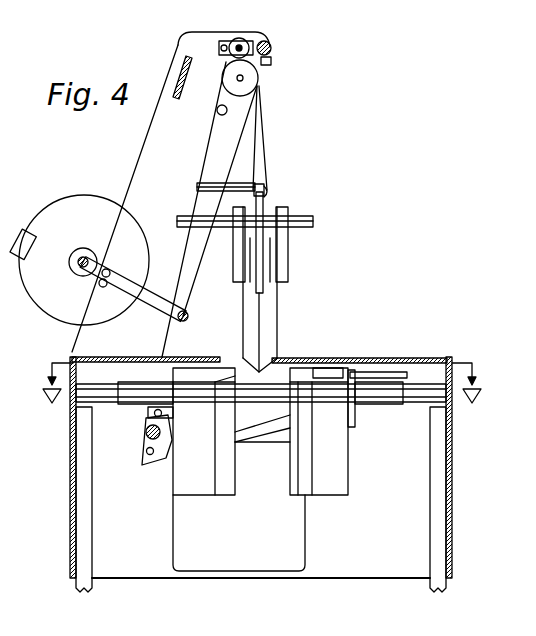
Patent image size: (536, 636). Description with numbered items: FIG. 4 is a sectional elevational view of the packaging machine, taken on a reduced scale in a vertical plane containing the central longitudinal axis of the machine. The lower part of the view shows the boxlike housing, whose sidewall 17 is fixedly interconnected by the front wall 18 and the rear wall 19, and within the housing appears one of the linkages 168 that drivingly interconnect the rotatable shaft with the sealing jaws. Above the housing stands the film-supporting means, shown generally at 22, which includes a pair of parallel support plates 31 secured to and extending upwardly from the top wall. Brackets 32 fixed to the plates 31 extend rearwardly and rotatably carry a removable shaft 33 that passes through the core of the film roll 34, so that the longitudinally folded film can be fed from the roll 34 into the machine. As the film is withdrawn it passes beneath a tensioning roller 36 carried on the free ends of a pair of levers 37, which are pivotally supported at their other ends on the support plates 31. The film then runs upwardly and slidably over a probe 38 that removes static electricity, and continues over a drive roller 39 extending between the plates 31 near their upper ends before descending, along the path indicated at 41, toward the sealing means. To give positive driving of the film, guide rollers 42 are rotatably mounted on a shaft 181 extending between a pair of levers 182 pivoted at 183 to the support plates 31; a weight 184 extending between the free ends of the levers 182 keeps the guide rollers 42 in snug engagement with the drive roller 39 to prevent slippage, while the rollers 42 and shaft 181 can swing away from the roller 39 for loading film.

The sidewall 17 is at (133, 558).
The front wall 18 is at (452, 464).
The rear wall 19 is at (70, 483).
The drive mechanism 22 is at (130, 147).
The support plates 31 is at (186, 46).
The brackets 32 is at (92, 283).
The removable shaft 33 is at (82, 260).
The roll 34 is at (37, 233).
The tensioning roller 36 is at (188, 318).
The levers 37 is at (157, 304).
The probe 38 is at (217, 112).
The drive roller 39 is at (248, 73).
The cable 41 is at (259, 90).
The guide rollers 42 is at (251, 42).
The linkage 168 is at (122, 433).
The shaft 181 is at (239, 46).
The levers 182 is at (272, 62).
The pivot 183 is at (222, 43).
The weight 184 is at (272, 47).